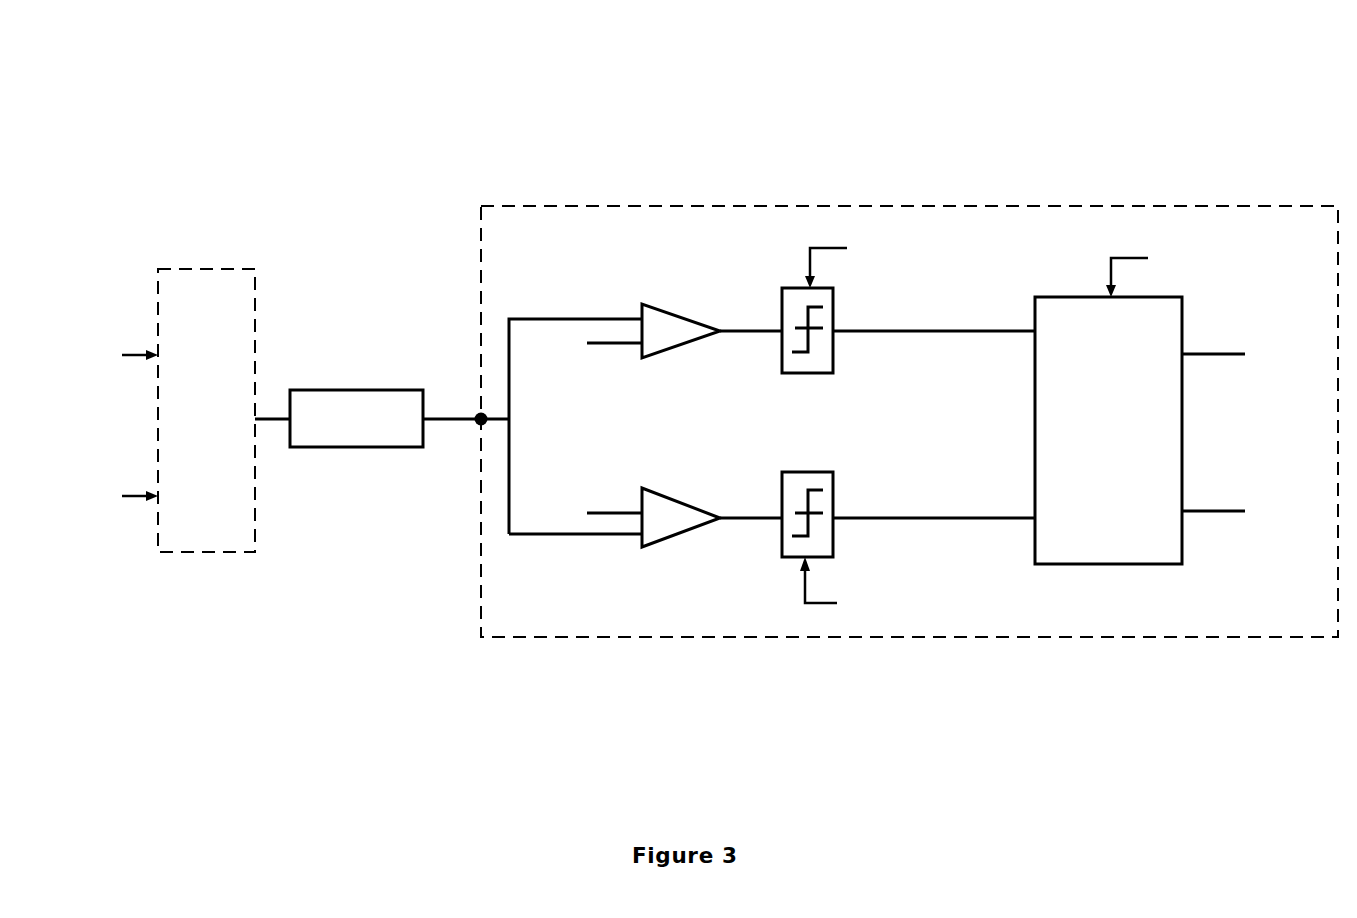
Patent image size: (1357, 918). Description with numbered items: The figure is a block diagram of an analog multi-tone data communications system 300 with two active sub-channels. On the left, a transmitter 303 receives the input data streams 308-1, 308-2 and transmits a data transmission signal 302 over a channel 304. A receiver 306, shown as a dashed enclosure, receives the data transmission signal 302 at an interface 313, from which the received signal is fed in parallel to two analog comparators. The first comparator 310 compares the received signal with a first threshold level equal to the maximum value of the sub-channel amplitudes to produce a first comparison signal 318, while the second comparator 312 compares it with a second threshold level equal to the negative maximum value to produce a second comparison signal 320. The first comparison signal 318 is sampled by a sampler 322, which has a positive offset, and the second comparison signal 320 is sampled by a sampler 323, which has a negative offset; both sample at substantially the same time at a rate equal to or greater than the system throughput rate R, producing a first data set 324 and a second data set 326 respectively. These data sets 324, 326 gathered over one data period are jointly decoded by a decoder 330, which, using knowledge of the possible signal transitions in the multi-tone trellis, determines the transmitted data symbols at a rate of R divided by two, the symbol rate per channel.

The data communications system 300 is at (700, 337).
The data transmission signal 302 is at (432, 366).
The transmitter 303 is at (206, 410).
The channel 304 is at (356, 418).
The receiver 306 is at (909, 421).
The data stream 308-1 is at (110, 362).
The data stream 308-2 is at (110, 497).
The first comparator 310 is at (670, 346).
The second comparator 312 is at (670, 533).
The interface 313 is at (478, 426).
The first comparison signal 318 is at (751, 318).
The second comparison signal 320 is at (751, 503).
The sampler 322 is at (812, 362).
The sampler 323 is at (790, 554).
The first data set 324 is at (934, 301).
The second data set 326 is at (934, 486).
The decoder 330 is at (1155, 396).